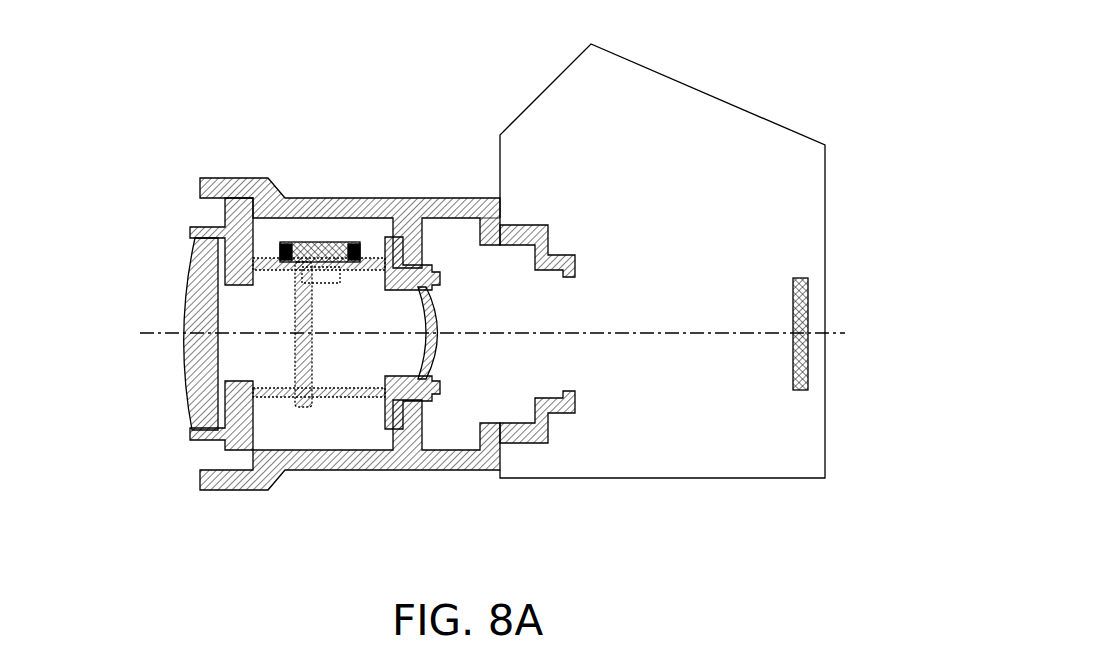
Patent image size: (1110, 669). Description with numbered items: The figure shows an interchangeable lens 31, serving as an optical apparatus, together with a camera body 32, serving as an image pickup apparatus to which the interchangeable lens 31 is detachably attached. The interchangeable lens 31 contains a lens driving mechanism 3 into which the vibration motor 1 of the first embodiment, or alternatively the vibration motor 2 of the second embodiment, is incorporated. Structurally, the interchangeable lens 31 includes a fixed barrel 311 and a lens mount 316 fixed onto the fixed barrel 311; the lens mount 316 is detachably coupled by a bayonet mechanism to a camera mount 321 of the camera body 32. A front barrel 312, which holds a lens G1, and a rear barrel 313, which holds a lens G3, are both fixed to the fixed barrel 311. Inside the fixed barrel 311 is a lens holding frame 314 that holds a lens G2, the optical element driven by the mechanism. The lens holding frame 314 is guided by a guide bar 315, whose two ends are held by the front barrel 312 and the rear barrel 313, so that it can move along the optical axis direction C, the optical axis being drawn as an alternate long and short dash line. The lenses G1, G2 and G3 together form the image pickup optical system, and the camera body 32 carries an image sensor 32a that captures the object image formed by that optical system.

The vibration motor 1 is at (330, 136).
The vibration motor 2 is at (321, 232).
The lens driving mechanism 3 is at (283, 228).
The interchangeable lens 31 is at (359, 288).
The fixed barrel 311 is at (377, 197).
The front barrel 312 is at (242, 428).
The rear barrel 313 is at (400, 402).
The lens holding frame 314 is at (338, 393).
The guide bar 315 is at (273, 278).
The lens mount 316 is at (485, 197).
The camera mount 321 is at (527, 228).
The camera body 32 is at (742, 107).
The image sensor 32a is at (807, 308).
The lens G1 is at (203, 267).
The lens G2 is at (292, 350).
The lens G3 is at (438, 355).
The optical axis direction C is at (471, 332).